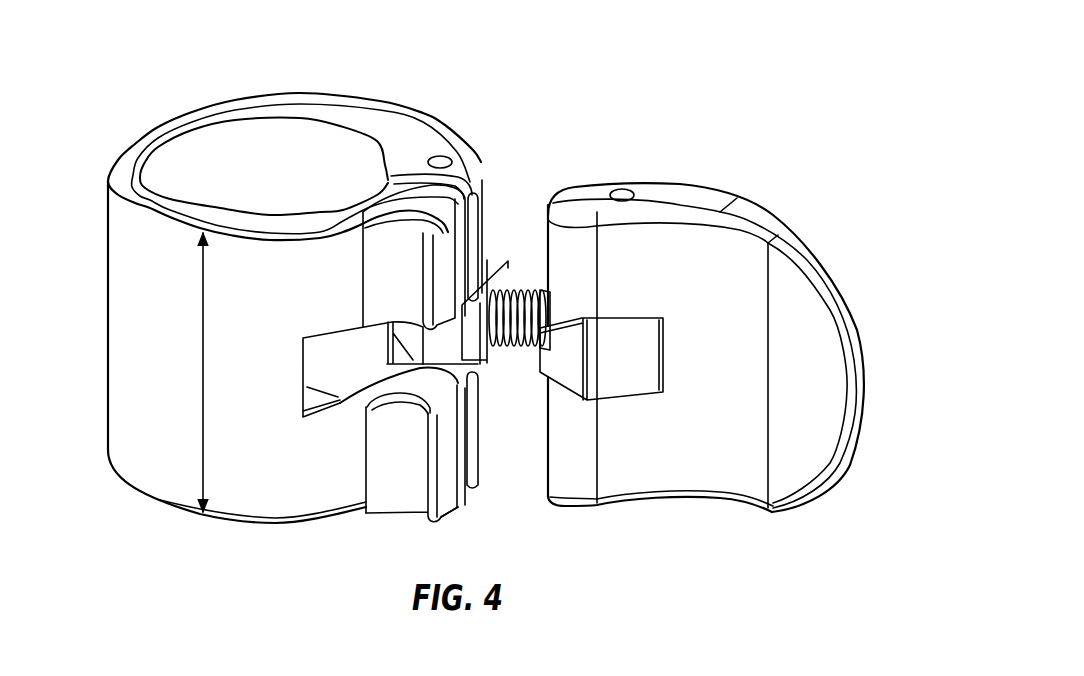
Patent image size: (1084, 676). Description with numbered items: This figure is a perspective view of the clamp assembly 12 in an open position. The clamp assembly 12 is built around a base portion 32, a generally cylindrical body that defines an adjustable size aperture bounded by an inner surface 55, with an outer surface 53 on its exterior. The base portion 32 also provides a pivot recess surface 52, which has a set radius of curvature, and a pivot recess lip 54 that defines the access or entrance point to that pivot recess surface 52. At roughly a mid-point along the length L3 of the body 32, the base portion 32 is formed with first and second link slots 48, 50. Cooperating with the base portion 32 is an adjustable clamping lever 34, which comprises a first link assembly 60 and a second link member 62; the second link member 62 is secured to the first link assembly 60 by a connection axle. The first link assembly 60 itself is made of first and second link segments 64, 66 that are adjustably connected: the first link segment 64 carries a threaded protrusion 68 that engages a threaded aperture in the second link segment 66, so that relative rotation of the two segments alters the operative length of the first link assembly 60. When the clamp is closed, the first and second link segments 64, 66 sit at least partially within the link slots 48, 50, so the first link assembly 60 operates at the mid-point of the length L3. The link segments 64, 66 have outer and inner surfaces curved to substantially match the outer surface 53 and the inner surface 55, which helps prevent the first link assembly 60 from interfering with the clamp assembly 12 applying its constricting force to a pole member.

The clamp assembly 12 is at (715, 107).
The base portion 32 is at (211, 96).
The adjustable clamping lever 34 is at (550, 157).
The first link slot 48 is at (390, 351).
The second link slot 50 is at (345, 340).
The pivot recess surface 52 is at (410, 285).
The outer surface 53 is at (277, 467).
The pivot recess lip 54 is at (428, 500).
The inner surface 55 is at (273, 181).
The first link assembly 60 is at (511, 252).
The second link member 62 is at (714, 182).
The first link segment 64 is at (501, 364).
The second link segment 66 is at (541, 381).
The threaded protrusion 68 is at (517, 295).
The length of the body L3 is at (204, 372).